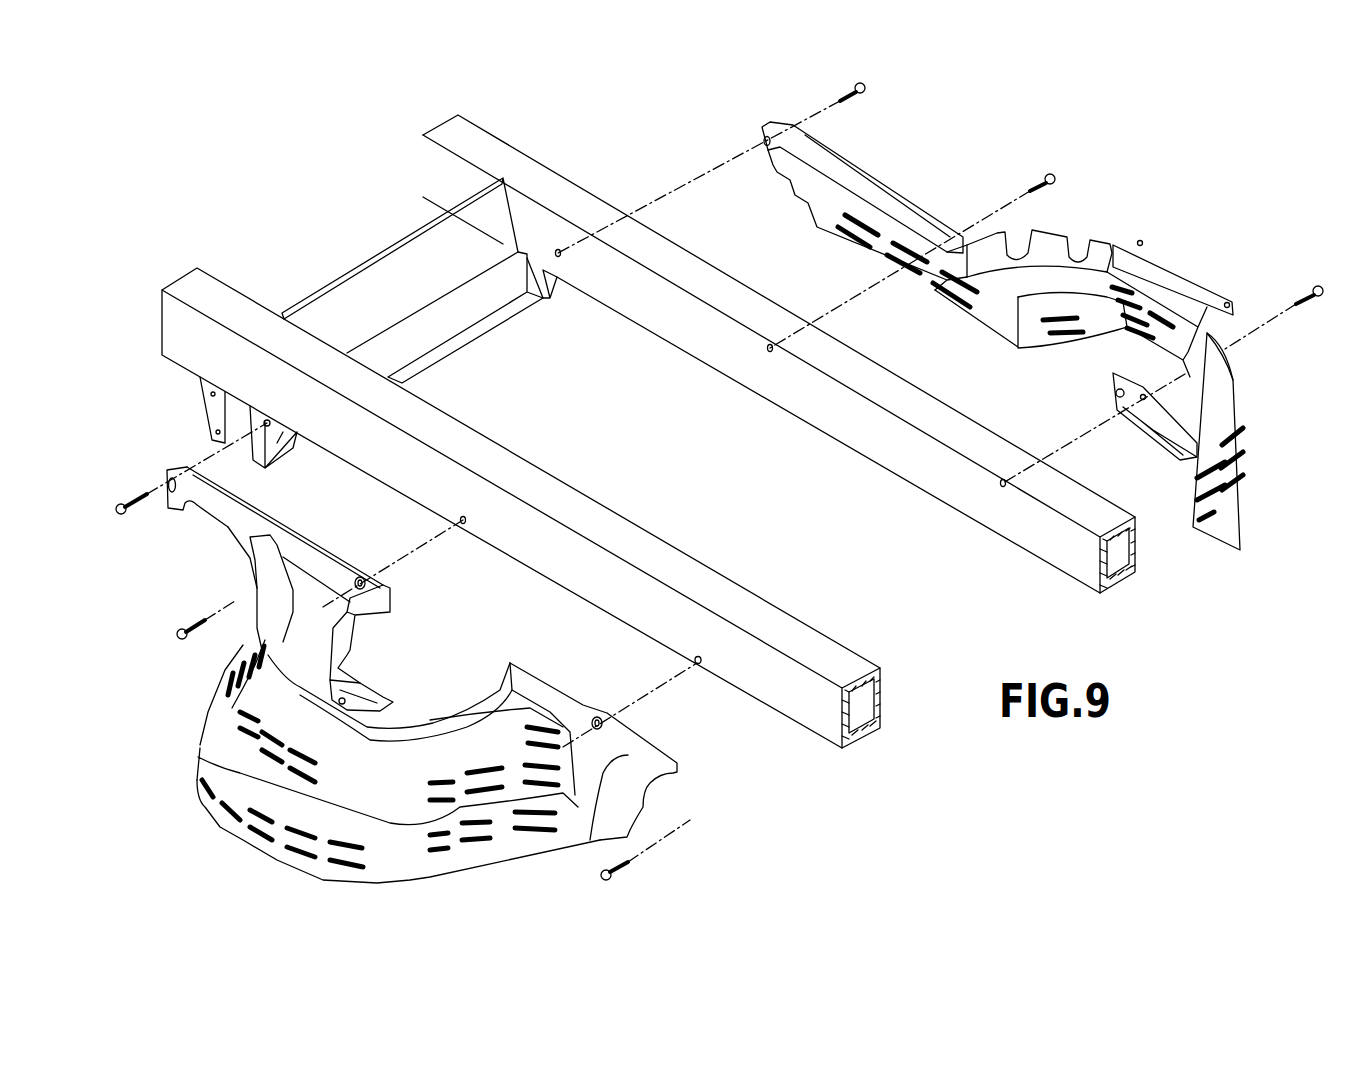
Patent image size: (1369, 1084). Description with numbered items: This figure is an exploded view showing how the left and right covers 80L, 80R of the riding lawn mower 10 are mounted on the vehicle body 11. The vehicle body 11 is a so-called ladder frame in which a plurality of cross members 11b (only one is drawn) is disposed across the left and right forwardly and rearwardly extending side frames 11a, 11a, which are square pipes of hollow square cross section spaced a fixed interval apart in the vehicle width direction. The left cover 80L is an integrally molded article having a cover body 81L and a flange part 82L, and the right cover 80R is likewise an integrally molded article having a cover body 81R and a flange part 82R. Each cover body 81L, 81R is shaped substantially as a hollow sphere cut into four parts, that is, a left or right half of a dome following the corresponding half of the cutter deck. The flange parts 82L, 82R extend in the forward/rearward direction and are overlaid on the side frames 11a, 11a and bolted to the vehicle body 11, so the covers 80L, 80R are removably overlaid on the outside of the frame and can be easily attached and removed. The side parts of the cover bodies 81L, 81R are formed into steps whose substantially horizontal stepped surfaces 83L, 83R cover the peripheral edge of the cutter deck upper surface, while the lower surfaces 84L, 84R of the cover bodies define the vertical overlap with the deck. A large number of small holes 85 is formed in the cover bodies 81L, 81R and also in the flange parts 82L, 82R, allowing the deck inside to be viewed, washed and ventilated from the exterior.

The riding lawn mower 10 is at (612, 136).
The vehicle body 11 is at (361, 88).
The side frame 11a is at (431, 164).
The cross member 11b is at (367, 277).
The right cover 80R is at (958, 78).
The left cover 80L is at (124, 545).
The right cover body 81R is at (1050, 277).
The left cover body 81L is at (226, 660).
The right flange part 82R is at (840, 167).
The left flange part 82L is at (222, 529).
The right stepped surface 83R is at (1237, 393).
The left stepped surface 83L is at (232, 752).
The lower surface of right cover body 84R is at (1250, 462).
The lower surface of left cover body 84L is at (243, 840).
The small holes 85 is at (937, 258).